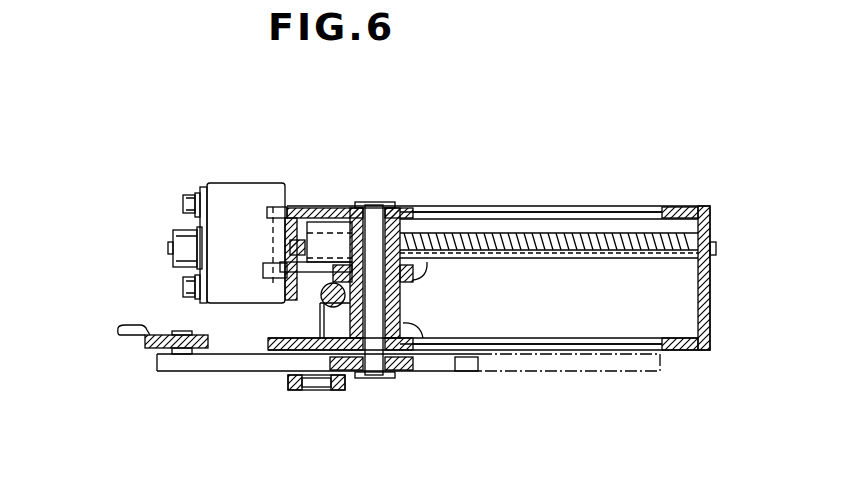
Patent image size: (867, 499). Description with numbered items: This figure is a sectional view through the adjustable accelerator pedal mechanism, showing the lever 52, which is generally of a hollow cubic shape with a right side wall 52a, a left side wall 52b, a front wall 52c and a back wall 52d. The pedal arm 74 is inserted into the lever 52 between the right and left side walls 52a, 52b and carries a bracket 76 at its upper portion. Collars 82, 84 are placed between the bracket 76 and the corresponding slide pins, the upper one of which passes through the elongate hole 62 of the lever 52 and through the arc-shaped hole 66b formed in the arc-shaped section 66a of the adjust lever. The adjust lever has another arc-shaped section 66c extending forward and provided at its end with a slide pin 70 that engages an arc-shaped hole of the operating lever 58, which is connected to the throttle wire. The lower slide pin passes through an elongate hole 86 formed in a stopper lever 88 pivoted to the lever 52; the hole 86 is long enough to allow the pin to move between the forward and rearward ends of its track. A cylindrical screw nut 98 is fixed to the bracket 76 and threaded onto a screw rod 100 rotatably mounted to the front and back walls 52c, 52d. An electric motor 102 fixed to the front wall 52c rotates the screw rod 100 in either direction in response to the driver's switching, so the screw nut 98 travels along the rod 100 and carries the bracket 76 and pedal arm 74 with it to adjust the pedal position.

The lever 52 is at (692, 212).
The right side wall 52a is at (688, 352).
The left side wall 52b is at (670, 208).
The front wall 52c is at (300, 208).
The back wall 52d is at (710, 292).
The elongate hole 62 is at (541, 219).
The bracket 76 is at (443, 233).
The screw rod 100 is at (607, 233).
The electric motor 102 is at (217, 193).
The collar 84 is at (280, 318).
The screw nut 98 is at (330, 245).
The pedal arm 74 is at (320, 305).
The collar 82 is at (407, 303).
The arc-shaped section 66a is at (550, 371).
The arc-shaped hole 66b is at (453, 371).
The arc-shaped section 66c is at (205, 371).
The slide pin 70 is at (182, 329).
The operating lever 58 is at (150, 352).
The elongate hole 86 is at (317, 390).
The stopper lever 88 is at (335, 380).